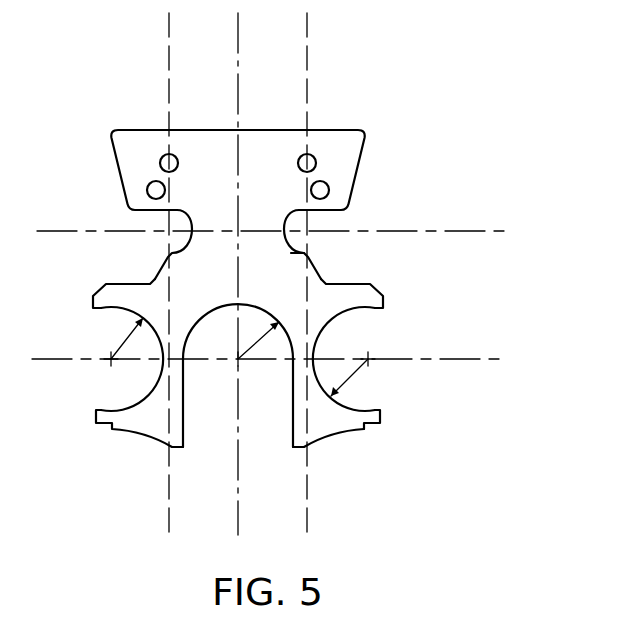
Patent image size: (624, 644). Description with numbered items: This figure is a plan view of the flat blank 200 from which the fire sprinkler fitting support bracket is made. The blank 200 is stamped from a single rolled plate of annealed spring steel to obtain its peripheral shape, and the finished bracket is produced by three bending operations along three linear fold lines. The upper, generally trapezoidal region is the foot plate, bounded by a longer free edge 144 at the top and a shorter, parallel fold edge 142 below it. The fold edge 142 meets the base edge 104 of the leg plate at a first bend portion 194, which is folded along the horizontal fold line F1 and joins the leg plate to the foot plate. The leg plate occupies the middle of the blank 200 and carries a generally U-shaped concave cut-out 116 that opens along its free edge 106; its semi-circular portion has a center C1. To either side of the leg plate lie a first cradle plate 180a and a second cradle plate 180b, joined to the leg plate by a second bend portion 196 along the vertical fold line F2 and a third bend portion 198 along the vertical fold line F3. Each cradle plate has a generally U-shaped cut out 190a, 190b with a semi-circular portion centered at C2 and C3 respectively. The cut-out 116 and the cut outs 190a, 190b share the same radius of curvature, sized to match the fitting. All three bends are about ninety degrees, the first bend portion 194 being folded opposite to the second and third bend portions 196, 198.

The blank 200 is at (408, 128).
The free edge 144 is at (341, 129).
The fold edge 142 is at (337, 212).
The first bend portion 194 is at (220, 232).
The base edge 104 is at (308, 255).
The second bend portion 196 is at (170, 308).
The third bend portion 198 is at (307, 305).
The concave cut out 190a is at (110, 407).
The concave cut out 190b is at (367, 410).
The first cradle plate 180a is at (143, 425).
The second cradle plate 180b is at (340, 425).
The concave cut-out 116 is at (292, 428).
The free edge 106 is at (305, 448).
The fold line F1 is at (495, 228).
The fold line F2 is at (166, 57).
The fold line F3 is at (308, 56).
The center C1 is at (241, 362).
The center C2 is at (108, 357).
The center C3 is at (373, 363).